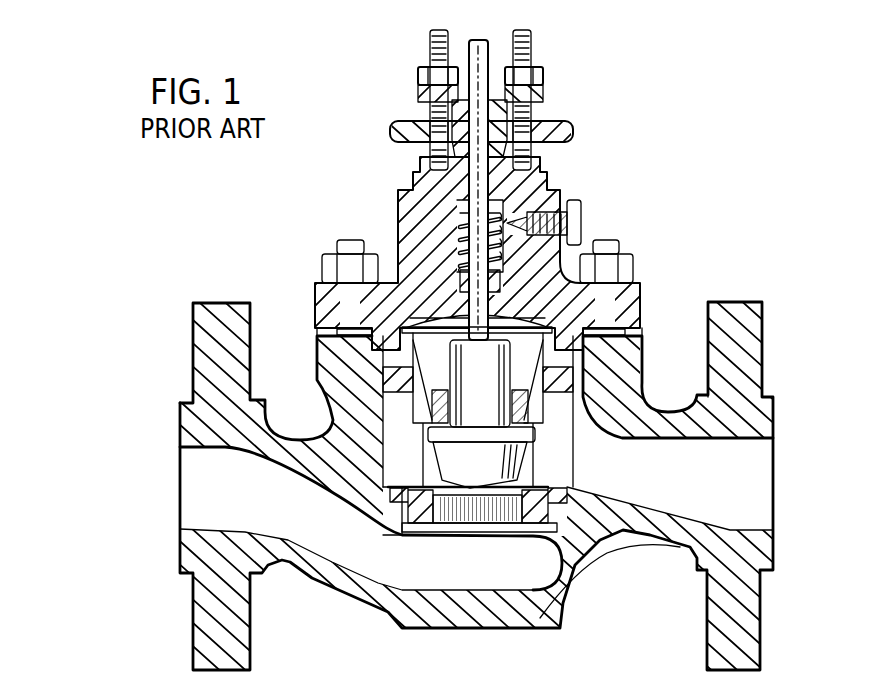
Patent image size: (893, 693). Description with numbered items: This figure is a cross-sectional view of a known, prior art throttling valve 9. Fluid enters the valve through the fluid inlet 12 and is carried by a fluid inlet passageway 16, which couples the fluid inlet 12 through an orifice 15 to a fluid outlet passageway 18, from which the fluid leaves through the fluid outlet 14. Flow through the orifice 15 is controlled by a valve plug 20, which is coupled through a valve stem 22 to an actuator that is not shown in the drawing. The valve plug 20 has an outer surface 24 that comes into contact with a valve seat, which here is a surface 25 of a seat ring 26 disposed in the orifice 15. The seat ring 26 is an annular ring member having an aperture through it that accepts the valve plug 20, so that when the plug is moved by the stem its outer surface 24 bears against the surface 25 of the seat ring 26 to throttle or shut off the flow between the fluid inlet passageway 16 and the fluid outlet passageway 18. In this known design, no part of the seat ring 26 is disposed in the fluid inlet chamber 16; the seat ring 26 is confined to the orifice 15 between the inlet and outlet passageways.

The throttling valve 9 is at (635, 138).
The fluid inlet 12 is at (178, 464).
The fluid outlet 14 is at (776, 452).
The orifice 15 is at (490, 516).
The fluid inlet passageway 16 is at (203, 503).
The fluid outlet passageway 18 is at (752, 503).
The valve plug 20 is at (478, 407).
The valve stem 22 is at (520, 312).
The outer surface 24 is at (513, 457).
The surface 25 is at (597, 560).
The seat ring 26 is at (400, 530).